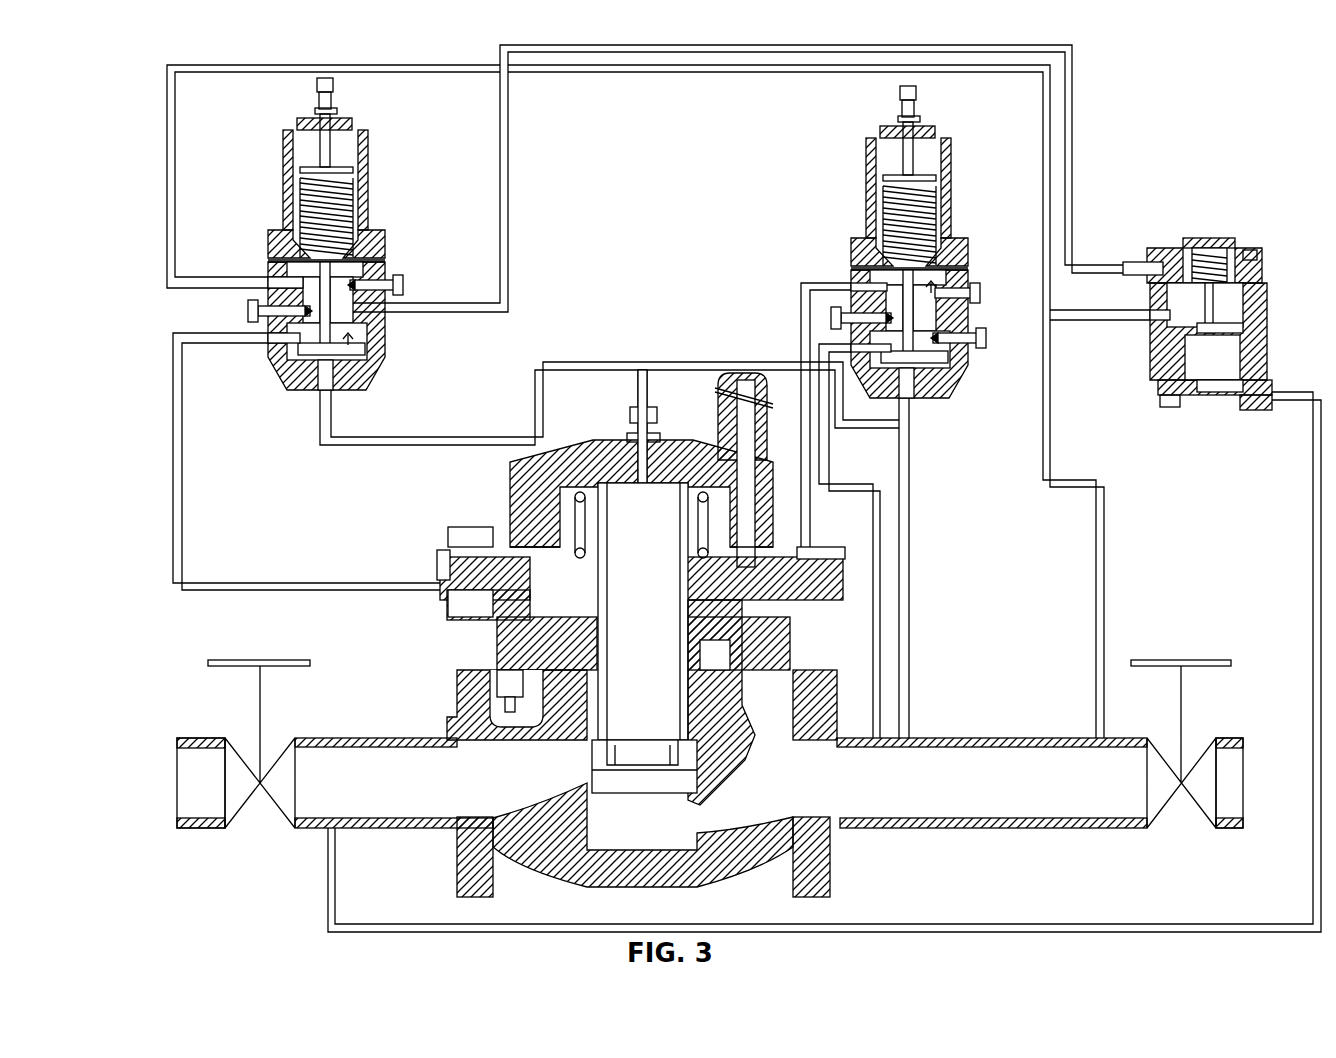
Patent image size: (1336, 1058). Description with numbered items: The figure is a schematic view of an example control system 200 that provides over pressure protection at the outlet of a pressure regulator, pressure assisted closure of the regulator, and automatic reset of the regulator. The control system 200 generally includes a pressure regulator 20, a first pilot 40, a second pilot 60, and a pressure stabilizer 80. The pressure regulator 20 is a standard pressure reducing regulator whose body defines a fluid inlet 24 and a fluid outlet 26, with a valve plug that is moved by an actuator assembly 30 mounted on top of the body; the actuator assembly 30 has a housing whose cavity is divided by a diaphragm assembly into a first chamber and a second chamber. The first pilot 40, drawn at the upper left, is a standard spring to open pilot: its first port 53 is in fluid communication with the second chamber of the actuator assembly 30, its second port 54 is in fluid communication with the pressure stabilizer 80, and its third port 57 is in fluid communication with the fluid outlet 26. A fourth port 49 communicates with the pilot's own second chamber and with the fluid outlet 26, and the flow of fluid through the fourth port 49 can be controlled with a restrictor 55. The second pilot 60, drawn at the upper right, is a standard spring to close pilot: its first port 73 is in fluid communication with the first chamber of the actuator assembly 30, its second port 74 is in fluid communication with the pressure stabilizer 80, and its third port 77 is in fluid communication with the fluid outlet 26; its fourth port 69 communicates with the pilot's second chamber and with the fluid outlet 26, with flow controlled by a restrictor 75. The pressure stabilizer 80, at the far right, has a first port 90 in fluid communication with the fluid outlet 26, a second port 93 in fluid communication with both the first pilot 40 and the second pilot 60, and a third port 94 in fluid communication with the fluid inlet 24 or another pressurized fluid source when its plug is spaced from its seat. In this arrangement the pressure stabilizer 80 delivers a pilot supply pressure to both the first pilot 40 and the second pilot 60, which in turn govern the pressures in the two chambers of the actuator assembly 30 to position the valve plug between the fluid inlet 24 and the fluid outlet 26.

The control system 200 is at (160, 66).
The pressure regulator 20 is at (634, 902).
The fluid inlet 24 is at (466, 788).
The fluid outlet 26 is at (826, 800).
The actuator assembly 30 is at (403, 519).
The first pilot 40 is at (297, 78).
The fourth port 49 is at (273, 284).
The first port 53 is at (270, 338).
The second port 54 is at (394, 312).
The restrictor 55 is at (256, 306).
The third port 57 is at (326, 390).
The second pilot 60 is at (820, 130).
The fourth port 69 is at (850, 346).
The first port 73 is at (850, 283).
The second port 74 is at (966, 330).
The restrictor 75 is at (830, 312).
The third port 77 is at (910, 392).
The pressure stabilizer 80 is at (1208, 222).
The first port 90 is at (1150, 268).
The second port 93 is at (1142, 320).
The third port 94 is at (1204, 398).